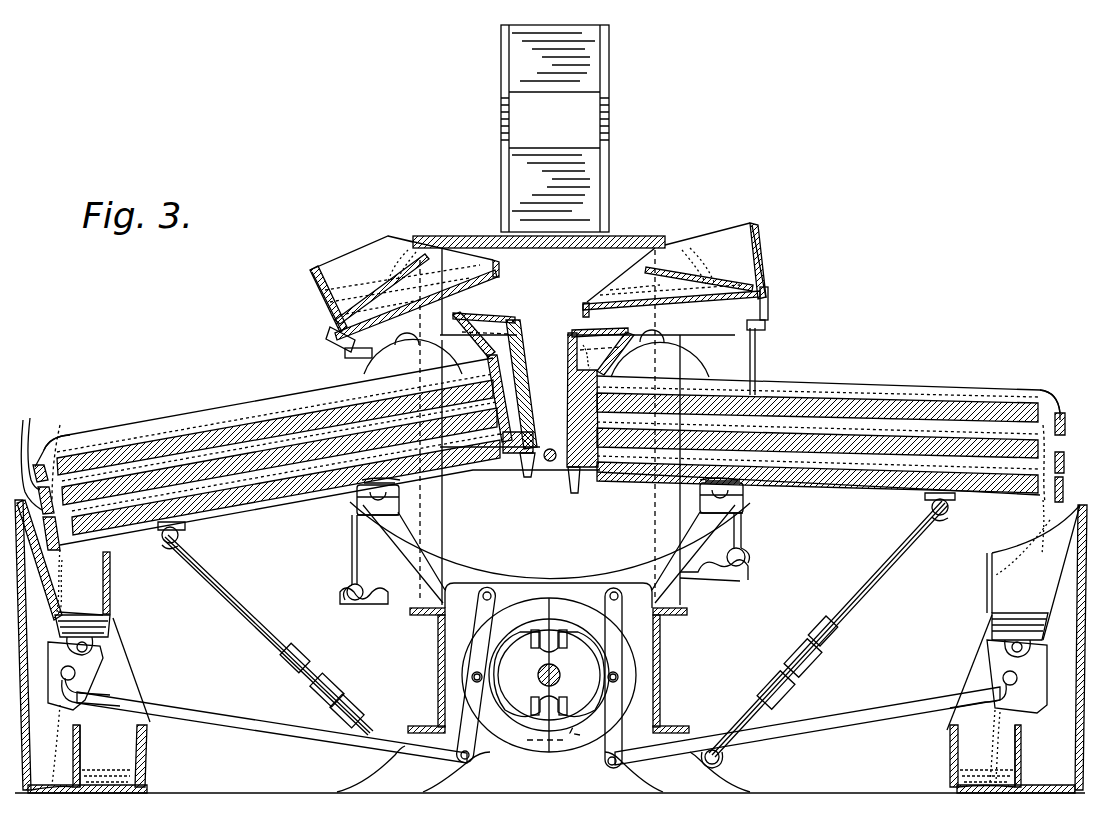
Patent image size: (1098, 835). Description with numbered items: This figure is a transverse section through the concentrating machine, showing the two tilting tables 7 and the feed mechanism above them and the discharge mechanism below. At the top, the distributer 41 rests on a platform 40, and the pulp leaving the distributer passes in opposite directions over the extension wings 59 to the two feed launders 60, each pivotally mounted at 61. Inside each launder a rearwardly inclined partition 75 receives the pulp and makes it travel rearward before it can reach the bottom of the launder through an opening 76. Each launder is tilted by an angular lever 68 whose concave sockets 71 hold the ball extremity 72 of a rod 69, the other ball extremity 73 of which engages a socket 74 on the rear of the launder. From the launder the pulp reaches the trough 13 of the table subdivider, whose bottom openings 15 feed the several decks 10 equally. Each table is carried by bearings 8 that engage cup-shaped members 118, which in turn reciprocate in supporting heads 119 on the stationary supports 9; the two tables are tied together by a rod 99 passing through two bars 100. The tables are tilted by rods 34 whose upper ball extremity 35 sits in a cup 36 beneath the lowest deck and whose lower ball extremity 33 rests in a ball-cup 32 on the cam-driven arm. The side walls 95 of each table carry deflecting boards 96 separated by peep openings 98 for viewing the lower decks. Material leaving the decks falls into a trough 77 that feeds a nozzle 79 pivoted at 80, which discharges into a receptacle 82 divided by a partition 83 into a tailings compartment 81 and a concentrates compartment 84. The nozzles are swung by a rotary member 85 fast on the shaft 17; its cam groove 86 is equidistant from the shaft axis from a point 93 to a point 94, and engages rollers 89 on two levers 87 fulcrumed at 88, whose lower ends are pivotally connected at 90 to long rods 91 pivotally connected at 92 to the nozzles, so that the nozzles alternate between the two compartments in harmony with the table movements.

The distributer 41 is at (572, 128).
The platform 40 is at (574, 420).
The feed launder 60 is at (318, 270).
The extension wing 59 is at (412, 256).
The partition 75 is at (393, 272).
The opening 76 is at (318, 300).
The socket 74 is at (333, 340).
The ball extremity 73 is at (345, 354).
The pivot 61 is at (413, 343).
The trough 13 is at (516, 330).
The opening 15 is at (580, 397).
The bar 100 is at (547, 478).
The rod 99 is at (551, 448).
The table 7 is at (549, 452).
The deck 10 is at (240, 520).
The side wall 95 is at (80, 418).
The peep opening 98 is at (63, 435).
The deflecting board 96 is at (27, 450).
The trough 77 is at (100, 577).
The pivot 80 is at (105, 632).
The nozzle 79 is at (103, 665).
The pivotal connection 92 is at (100, 688).
The rod 91 is at (265, 728).
The stationary support 9 is at (860, 724).
The rod 34 is at (555, 629).
The upper extremity 35 is at (180, 537).
The cup 36 is at (970, 513).
The concentrates compartment 84 is at (950, 745).
The partition 83 is at (81, 738).
The receptacle 82 is at (551, 801).
The compartment 81 is at (62, 755).
The cam groove 86 is at (528, 605).
The rotary member 85 is at (575, 608).
The point 93 is at (549, 673).
The shaft 17 is at (560, 675).
The fulcrum 88 is at (488, 592).
The roller 89 is at (470, 676).
The lever 87 is at (440, 634).
The pivotal connection 90 is at (475, 765).
The point 94 is at (425, 750).
The lower ball extremity 33 is at (740, 752).
The ball-cup 32 is at (722, 760).
The cup-shaped member 118 is at (400, 508).
The rod 69 is at (350, 560).
The supporting head 119 is at (350, 530).
The bearing 8 is at (358, 503).
The ball extremity 72 is at (345, 592).
The concave socket 71 is at (347, 600).
The angular lever 68 is at (365, 612).